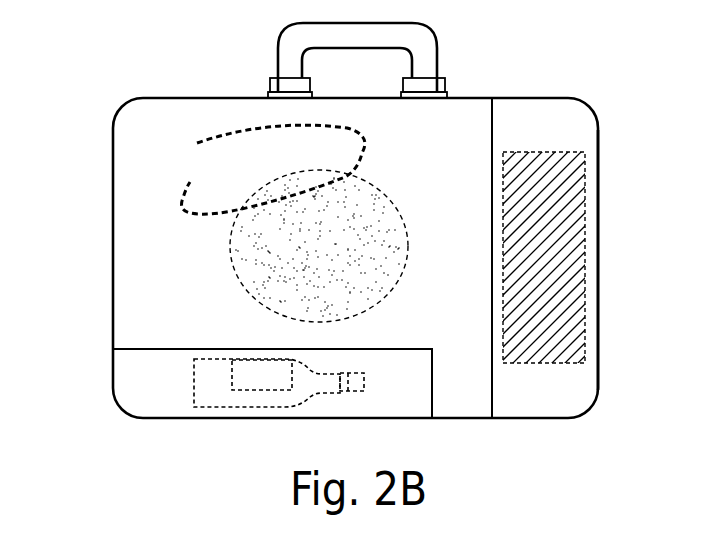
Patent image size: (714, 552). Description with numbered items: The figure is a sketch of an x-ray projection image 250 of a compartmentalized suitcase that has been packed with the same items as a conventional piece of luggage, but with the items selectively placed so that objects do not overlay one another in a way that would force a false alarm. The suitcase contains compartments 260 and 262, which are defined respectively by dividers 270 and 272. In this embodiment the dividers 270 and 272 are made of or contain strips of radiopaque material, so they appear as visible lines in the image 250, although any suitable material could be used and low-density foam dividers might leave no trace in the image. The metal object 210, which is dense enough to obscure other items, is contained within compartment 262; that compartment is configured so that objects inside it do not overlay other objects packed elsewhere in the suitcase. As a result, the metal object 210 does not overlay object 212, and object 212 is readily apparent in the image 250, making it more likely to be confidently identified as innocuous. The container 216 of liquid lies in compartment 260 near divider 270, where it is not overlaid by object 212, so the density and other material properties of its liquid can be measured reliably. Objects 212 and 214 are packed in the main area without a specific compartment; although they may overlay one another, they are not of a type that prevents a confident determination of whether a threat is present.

The metal object 210 is at (585, 183).
The object 212 is at (383, 193).
The object 214 is at (242, 137).
The container of liquid 216 is at (228, 407).
The image 250 is at (615, 361).
The compartment 260 is at (128, 379).
The compartment 262 is at (608, 258).
The divider 270 is at (185, 349).
The divider 272 is at (494, 113).